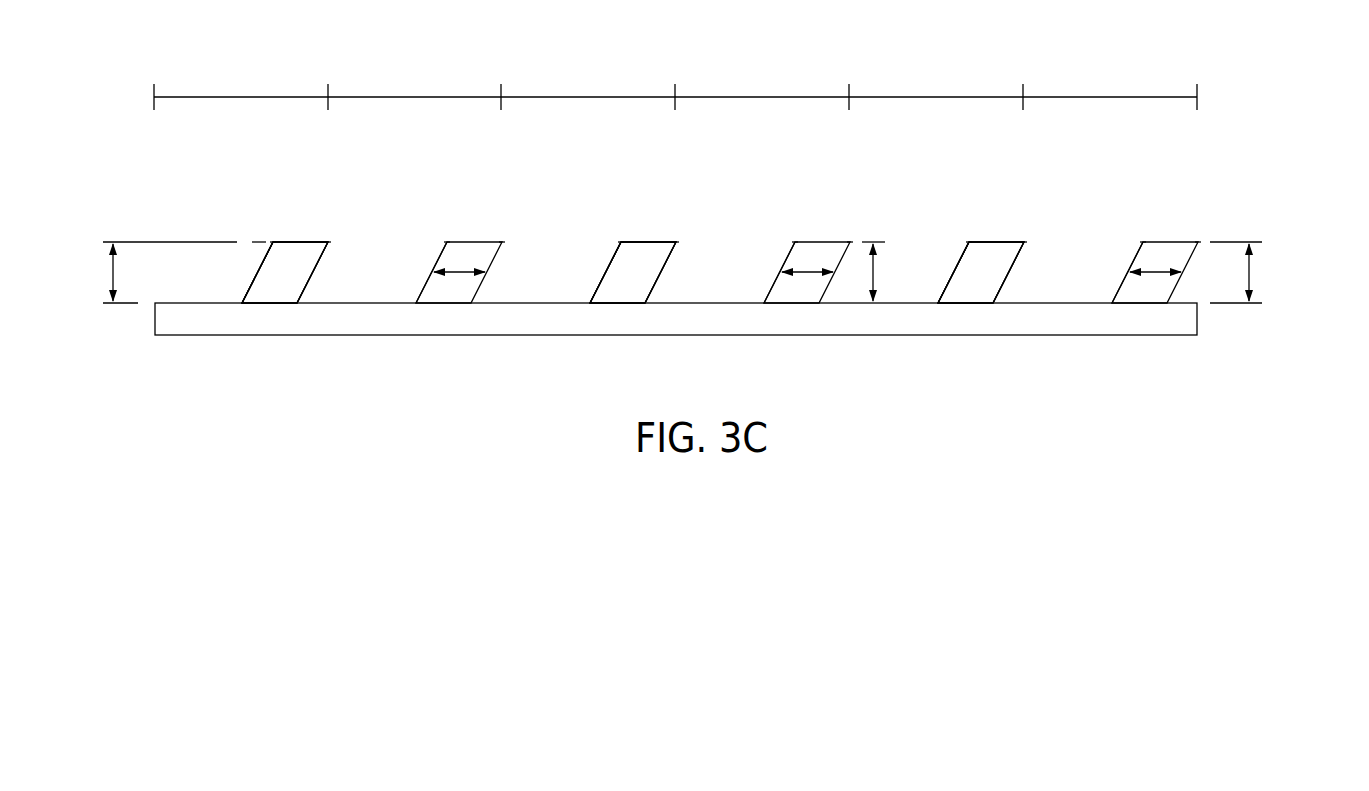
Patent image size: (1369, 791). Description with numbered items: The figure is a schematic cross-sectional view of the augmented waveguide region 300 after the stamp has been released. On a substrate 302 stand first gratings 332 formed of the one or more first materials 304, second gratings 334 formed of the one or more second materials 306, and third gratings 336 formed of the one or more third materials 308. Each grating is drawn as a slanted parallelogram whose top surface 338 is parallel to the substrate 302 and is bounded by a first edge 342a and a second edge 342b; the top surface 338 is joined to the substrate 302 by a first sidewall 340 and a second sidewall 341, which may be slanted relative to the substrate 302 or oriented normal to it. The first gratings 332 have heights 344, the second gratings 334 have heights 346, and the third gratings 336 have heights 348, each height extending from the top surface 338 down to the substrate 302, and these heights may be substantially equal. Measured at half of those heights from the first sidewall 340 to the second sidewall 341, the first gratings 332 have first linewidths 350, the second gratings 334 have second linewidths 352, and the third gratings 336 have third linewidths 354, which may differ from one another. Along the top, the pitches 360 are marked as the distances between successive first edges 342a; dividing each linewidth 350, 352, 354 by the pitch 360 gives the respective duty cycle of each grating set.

The augmented waveguide region 300 is at (1230, 123).
The substrate 302 is at (1199, 321).
The one or more first materials 304 is at (279, 282).
The one or more second materials 306 is at (623, 283).
The one or more third materials 308 is at (975, 282).
The first gratings 332 is at (254, 280).
The second gratings 334 is at (600, 283).
The third gratings 336 is at (948, 283).
The top surfaces 338 is at (301, 238).
The first sidewalls 340 is at (262, 254).
The second sidewalls 341 is at (318, 271).
The first edge 342a is at (336, 238).
The second edge 342b is at (272, 238).
The heights 344 is at (112, 275).
The heights 346 is at (874, 271).
The heights 348 is at (1250, 272).
The first linewidths 350 is at (460, 276).
The second linewidths 352 is at (808, 276).
The third linewidths 354 is at (1155, 276).
The pitches 360 is at (238, 95).